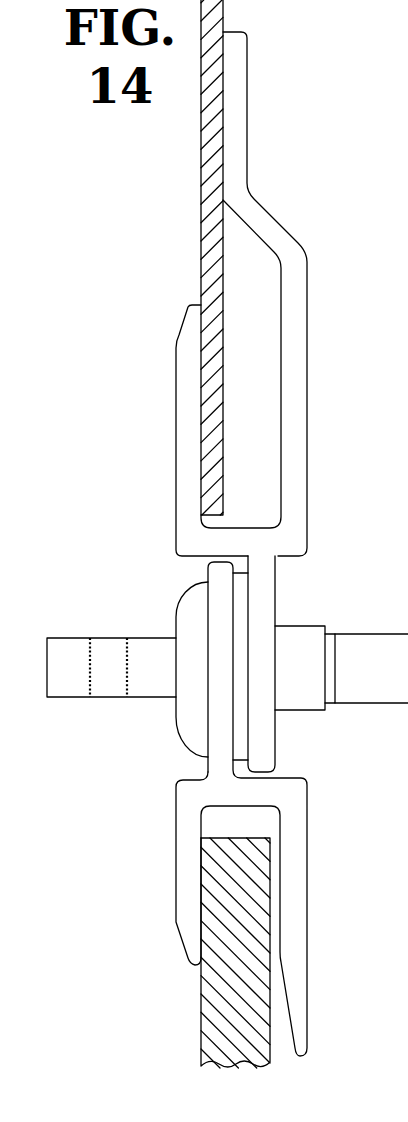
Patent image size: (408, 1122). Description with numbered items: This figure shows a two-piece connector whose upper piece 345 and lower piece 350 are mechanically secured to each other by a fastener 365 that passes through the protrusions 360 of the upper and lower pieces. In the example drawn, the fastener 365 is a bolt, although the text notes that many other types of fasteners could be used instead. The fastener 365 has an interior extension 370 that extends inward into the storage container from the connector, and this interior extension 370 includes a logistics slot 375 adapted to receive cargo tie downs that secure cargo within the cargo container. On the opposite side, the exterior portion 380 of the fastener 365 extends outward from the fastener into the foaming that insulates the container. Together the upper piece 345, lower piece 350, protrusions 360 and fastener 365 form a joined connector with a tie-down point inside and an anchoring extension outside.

The upper piece 345 is at (188, 370).
The lower piece 350 is at (185, 823).
The protrusions 360 is at (260, 617).
The fastener 365 is at (190, 688).
The interior extension 370 is at (61, 685).
The logistics slot 375 is at (110, 652).
The exterior portion 380 is at (358, 670).